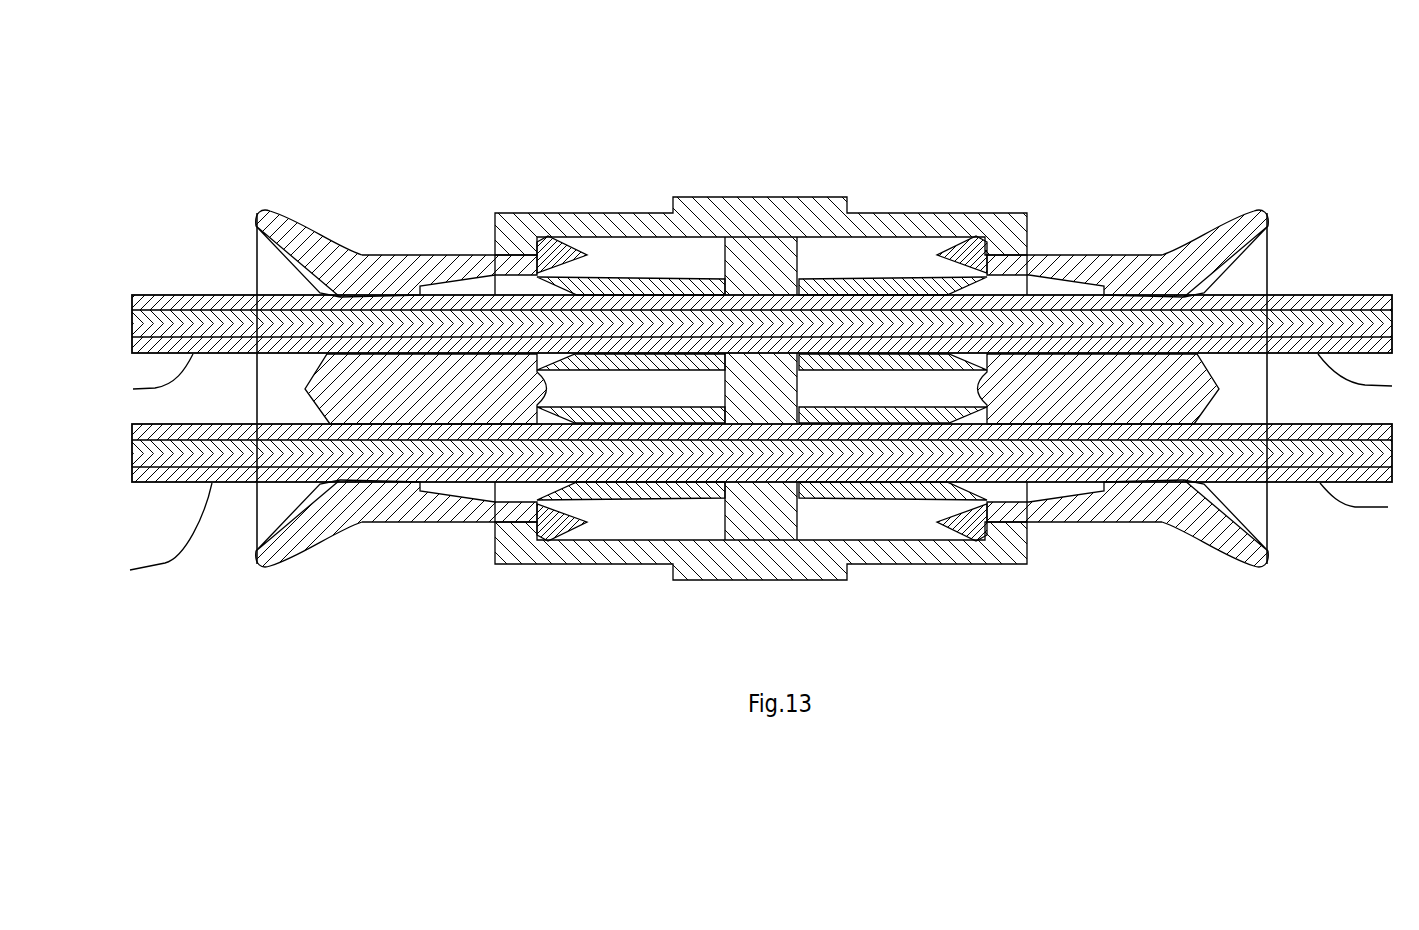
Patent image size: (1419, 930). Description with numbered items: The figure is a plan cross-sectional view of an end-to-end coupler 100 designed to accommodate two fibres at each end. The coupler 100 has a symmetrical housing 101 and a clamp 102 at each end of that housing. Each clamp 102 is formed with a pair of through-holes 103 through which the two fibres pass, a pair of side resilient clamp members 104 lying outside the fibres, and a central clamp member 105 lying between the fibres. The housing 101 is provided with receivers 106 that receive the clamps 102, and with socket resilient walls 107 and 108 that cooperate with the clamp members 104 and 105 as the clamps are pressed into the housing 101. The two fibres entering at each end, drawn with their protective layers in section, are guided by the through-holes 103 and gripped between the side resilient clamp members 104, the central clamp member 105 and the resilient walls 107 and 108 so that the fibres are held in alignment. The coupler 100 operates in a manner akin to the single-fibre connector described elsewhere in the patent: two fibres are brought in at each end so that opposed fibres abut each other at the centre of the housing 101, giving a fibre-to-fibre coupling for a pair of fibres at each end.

The coupler 100 is at (210, 133).
The housing 101 is at (880, 208).
The clamp 102 is at (323, 243).
The through-holes 103 is at (383, 296).
The side resilient clamp members 104 is at (477, 292).
The central clamp member 105 is at (472, 400).
The receivers 106 is at (720, 233).
The socket resilient wall 107 is at (637, 292).
The socket resilient wall 108 is at (927, 363).